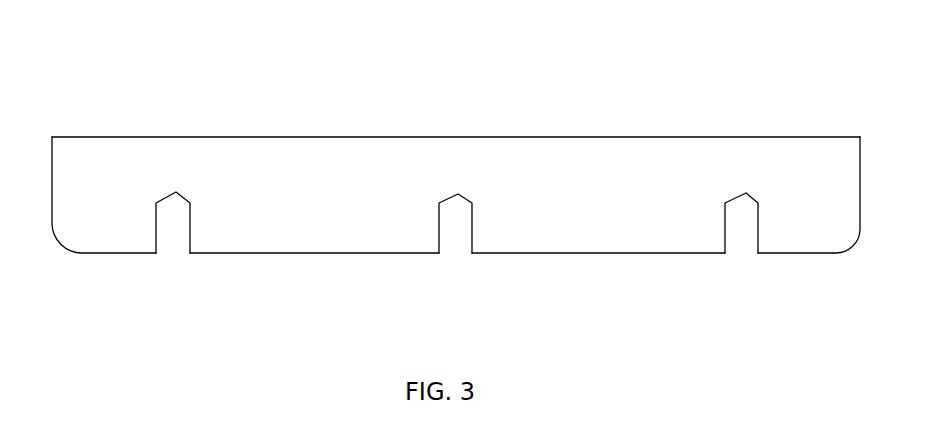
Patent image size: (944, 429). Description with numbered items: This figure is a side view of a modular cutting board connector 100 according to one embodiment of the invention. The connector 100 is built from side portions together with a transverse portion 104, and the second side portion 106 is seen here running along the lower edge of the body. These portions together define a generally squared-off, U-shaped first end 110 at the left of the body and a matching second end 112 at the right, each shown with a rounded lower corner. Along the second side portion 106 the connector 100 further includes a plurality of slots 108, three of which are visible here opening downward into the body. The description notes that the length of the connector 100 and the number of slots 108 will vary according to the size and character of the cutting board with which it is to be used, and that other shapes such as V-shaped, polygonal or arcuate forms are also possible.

The modular cutting board connector 100 is at (461, 170).
The transverse portion 104 is at (305, 137).
The second side portion 106 is at (330, 218).
The slots 108 is at (176, 193).
The first end 110 is at (52, 180).
The second end 112 is at (860, 177).